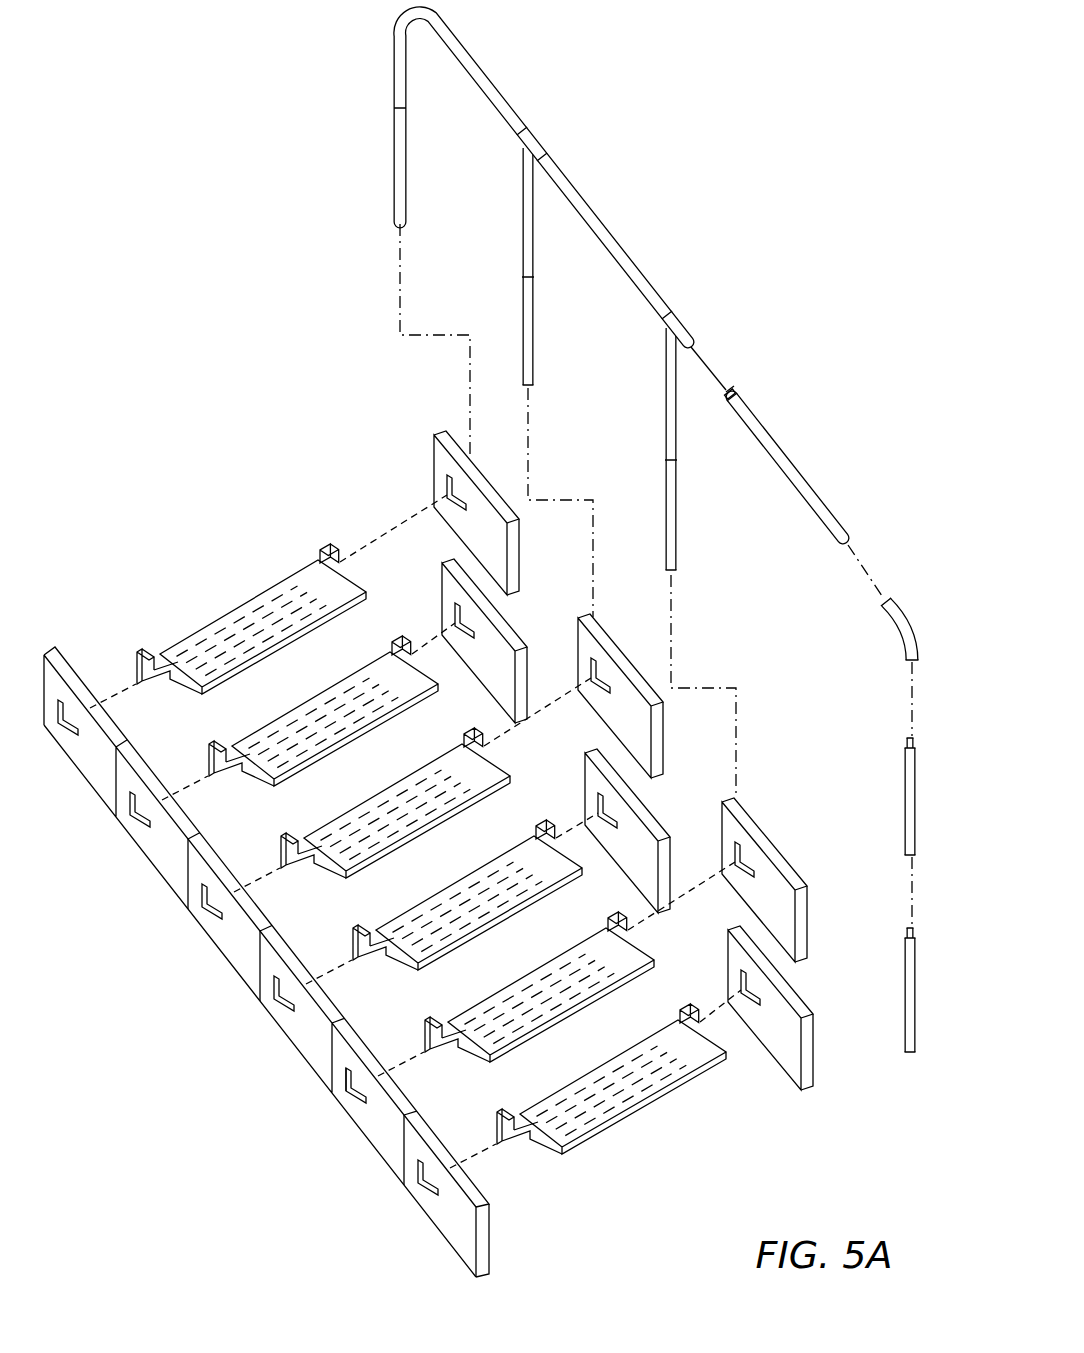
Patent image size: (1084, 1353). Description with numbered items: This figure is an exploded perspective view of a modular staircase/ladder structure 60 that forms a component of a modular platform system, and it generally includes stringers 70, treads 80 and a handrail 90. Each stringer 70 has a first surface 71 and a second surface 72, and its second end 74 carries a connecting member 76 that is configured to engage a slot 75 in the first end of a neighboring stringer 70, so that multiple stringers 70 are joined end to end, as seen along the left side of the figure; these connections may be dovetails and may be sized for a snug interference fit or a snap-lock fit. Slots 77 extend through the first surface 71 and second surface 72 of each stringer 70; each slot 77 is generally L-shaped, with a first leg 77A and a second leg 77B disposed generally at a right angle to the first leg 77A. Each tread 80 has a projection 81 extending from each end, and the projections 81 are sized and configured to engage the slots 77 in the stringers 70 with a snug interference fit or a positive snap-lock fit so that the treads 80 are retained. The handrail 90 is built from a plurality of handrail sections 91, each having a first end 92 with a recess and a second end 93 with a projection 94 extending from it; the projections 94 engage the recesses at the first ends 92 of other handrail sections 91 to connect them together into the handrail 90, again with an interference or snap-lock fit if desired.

The modular staircase/ladder structure 60 is at (746, 274).
The stringer 70 is at (270, 976).
The first surface 71 is at (240, 960).
The second surface 72 is at (496, 522).
The second end 74 is at (434, 436).
The slot 75 is at (512, 578).
The connecting member 76 is at (430, 628).
The slot 77 is at (457, 505).
The first leg 77A is at (348, 1095).
The second leg 77B is at (346, 1072).
The tread 80 is at (252, 601).
The projection 81 is at (148, 688).
The handrail 90 is at (860, 520).
The handrail section 91 is at (676, 530).
The first end 92 is at (680, 446).
The second end 93 is at (745, 397).
The projection 94 is at (731, 388).